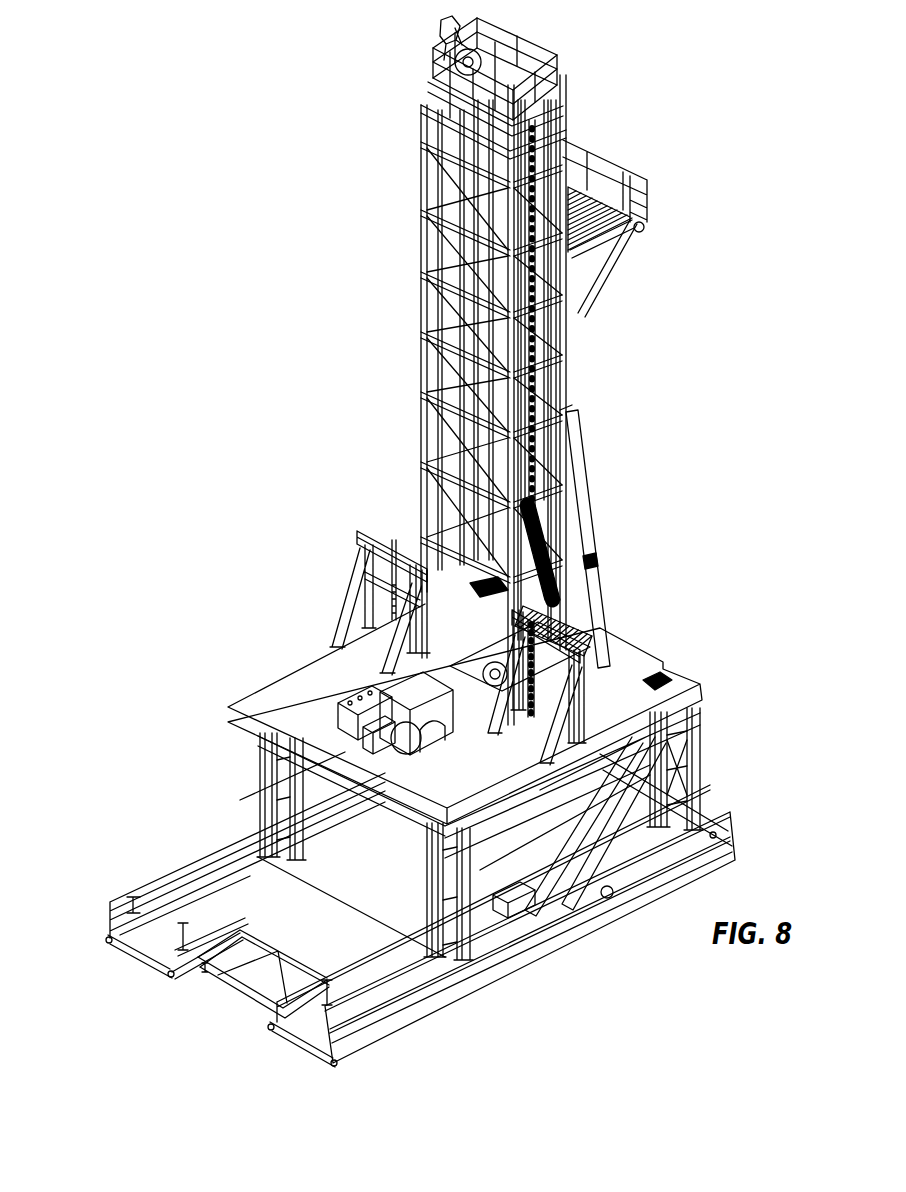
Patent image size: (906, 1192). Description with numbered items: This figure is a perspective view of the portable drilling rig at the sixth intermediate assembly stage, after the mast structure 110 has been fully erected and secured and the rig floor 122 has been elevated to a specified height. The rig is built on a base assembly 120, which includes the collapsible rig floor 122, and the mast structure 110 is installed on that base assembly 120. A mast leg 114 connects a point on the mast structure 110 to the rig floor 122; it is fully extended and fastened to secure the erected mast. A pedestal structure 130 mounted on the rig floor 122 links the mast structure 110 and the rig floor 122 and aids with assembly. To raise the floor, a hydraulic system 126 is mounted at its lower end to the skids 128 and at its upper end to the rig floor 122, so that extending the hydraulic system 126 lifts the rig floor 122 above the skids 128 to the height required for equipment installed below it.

The mast structure 110 is at (427, 297).
The mast leg 114 is at (588, 515).
The base assembly 120 is at (108, 954).
The rig floor 122 is at (262, 700).
The hydraulic system 126 is at (716, 772).
The skids 128 is at (150, 965).
The pedestal structure 130 is at (342, 610).